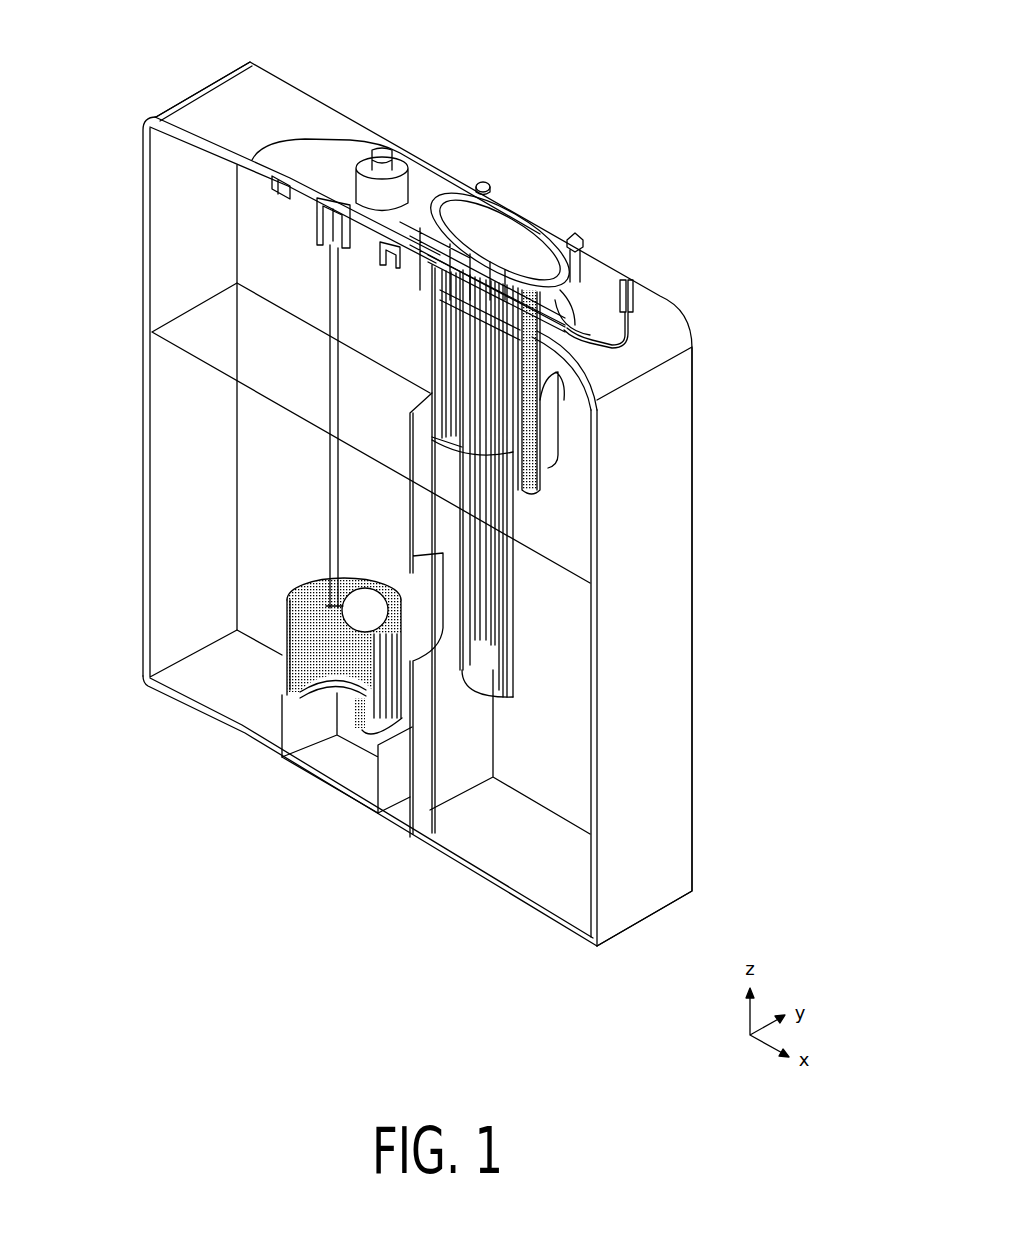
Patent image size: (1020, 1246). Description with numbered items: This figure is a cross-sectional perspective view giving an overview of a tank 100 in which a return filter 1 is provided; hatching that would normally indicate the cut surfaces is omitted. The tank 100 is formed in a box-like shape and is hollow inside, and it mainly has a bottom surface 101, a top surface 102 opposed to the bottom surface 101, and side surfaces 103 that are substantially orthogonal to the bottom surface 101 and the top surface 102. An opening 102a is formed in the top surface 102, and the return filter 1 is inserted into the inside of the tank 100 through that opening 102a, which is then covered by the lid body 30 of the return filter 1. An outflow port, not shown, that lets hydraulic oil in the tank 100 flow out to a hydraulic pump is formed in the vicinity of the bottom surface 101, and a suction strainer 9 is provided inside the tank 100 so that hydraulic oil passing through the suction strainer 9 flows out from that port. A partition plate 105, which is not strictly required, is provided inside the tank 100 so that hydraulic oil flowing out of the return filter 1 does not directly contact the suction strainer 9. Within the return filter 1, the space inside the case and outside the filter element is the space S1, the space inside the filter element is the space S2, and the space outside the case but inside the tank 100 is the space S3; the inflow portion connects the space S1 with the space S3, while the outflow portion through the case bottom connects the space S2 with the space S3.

The tank 100 is at (145, 119).
The bottom surface 101 is at (560, 893).
The top surface 102 is at (273, 90).
The opening 102a is at (570, 333).
The side surfaces 103 is at (663, 600).
The partition plate 105 is at (452, 773).
The return filter 1 is at (540, 437).
The lid body 30 is at (517, 227).
The suction strainer 9 is at (287, 627).
The space inside the case and outside the filter element S1 is at (433, 290).
The space inside the filter element S2 is at (480, 360).
The space outside the case S3 is at (262, 241).